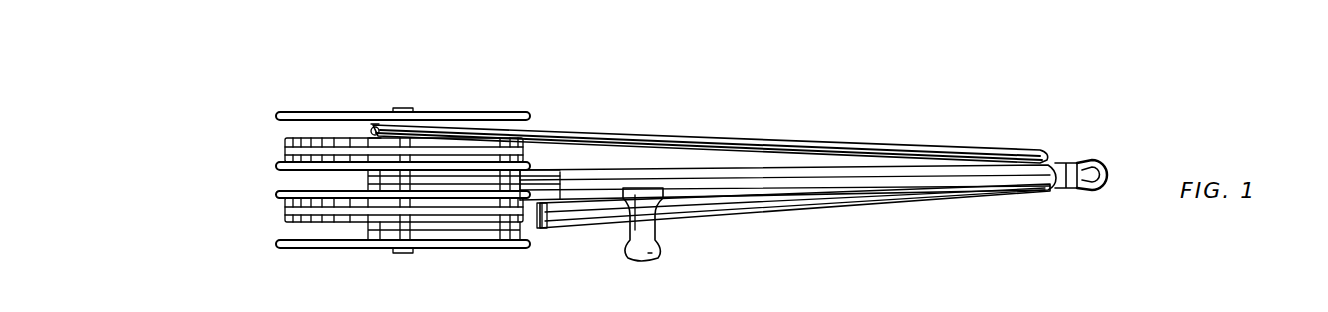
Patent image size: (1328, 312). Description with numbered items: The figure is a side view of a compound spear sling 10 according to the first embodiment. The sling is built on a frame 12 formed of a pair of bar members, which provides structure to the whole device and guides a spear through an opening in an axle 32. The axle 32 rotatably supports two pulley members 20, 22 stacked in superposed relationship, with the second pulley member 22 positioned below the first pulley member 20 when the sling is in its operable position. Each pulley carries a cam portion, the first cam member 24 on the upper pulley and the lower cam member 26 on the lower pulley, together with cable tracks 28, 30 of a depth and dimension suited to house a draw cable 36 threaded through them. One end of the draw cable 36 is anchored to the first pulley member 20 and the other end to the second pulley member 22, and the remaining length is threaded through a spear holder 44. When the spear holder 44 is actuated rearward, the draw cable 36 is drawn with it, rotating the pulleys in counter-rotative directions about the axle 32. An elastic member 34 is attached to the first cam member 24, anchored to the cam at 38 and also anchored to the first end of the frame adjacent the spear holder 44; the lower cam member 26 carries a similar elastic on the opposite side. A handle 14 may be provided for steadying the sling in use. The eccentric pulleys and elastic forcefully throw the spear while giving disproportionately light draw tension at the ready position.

The compound spear sling 10 is at (210, 129).
The frame 12 is at (782, 177).
The handle 14 is at (655, 245).
The first pulley member 20 is at (470, 112).
The second pulley member 22 is at (482, 246).
The first cam member 24 is at (535, 120).
The lower cam member 26 is at (460, 232).
The cable track 28 is at (282, 150).
The cable track 30 is at (282, 212).
The axle 32 is at (410, 110).
The elastic member 34 is at (665, 140).
The draw cable 36 is at (547, 230).
The anchor point 38 is at (368, 125).
The spear holder 44 is at (1100, 183).